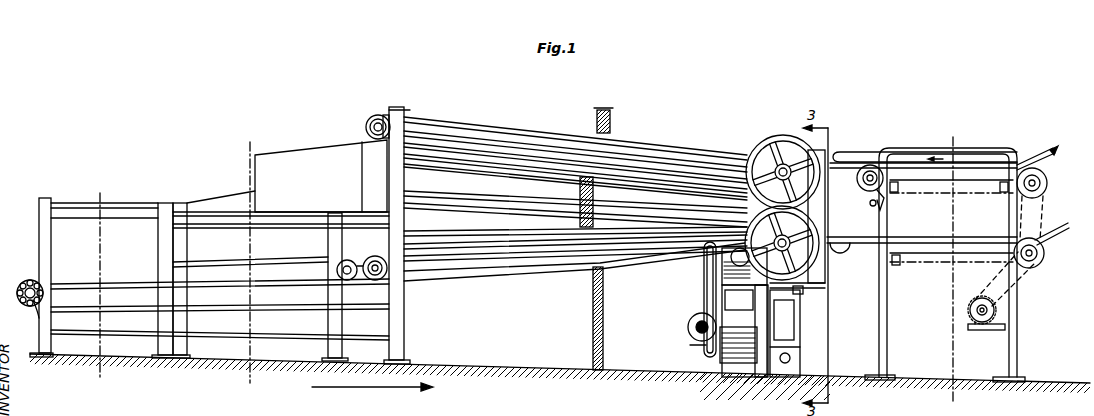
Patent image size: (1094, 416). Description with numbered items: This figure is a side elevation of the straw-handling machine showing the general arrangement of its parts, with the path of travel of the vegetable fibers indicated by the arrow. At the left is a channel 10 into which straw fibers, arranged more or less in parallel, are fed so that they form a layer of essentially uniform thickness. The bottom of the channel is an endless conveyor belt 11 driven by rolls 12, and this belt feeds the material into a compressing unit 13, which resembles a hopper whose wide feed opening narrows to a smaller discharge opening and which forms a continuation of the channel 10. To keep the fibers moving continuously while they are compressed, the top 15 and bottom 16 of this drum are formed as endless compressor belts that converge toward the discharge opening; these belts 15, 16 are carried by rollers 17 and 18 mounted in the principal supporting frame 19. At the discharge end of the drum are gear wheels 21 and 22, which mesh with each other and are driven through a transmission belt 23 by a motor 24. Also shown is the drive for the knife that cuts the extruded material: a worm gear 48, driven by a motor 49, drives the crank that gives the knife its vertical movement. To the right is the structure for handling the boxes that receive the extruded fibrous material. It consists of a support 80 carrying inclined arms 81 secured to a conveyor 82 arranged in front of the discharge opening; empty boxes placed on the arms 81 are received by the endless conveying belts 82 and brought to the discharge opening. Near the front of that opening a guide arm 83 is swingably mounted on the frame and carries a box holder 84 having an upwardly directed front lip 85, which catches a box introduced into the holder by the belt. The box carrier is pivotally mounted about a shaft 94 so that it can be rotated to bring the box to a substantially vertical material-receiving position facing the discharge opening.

The channel 10 is at (80, 207).
The endless conveyor belt 11 is at (33, 273).
The rolls 12 is at (35, 305).
The compressing unit 13 is at (478, 182).
The top compressor belt 15 is at (681, 147).
The bottom compressor belt 16 is at (546, 271).
The roller 17 is at (378, 115).
The roller 18 is at (383, 283).
The principal supporting frame 19 is at (404, 332).
The gear wheel 21 is at (775, 142).
The gear wheel 22 is at (800, 268).
The transmission belt 23 is at (703, 300).
The motor 24 is at (718, 360).
The worm gear 48 is at (768, 347).
The motor 49 is at (690, 325).
The support 80 is at (1005, 324).
The inclined arms 81 is at (1052, 152).
The conveyor 82 is at (973, 162).
The guide arm 83 is at (884, 196).
The box holder 84 is at (858, 157).
The front lip 85 is at (833, 152).
The shaft 94 is at (870, 204).